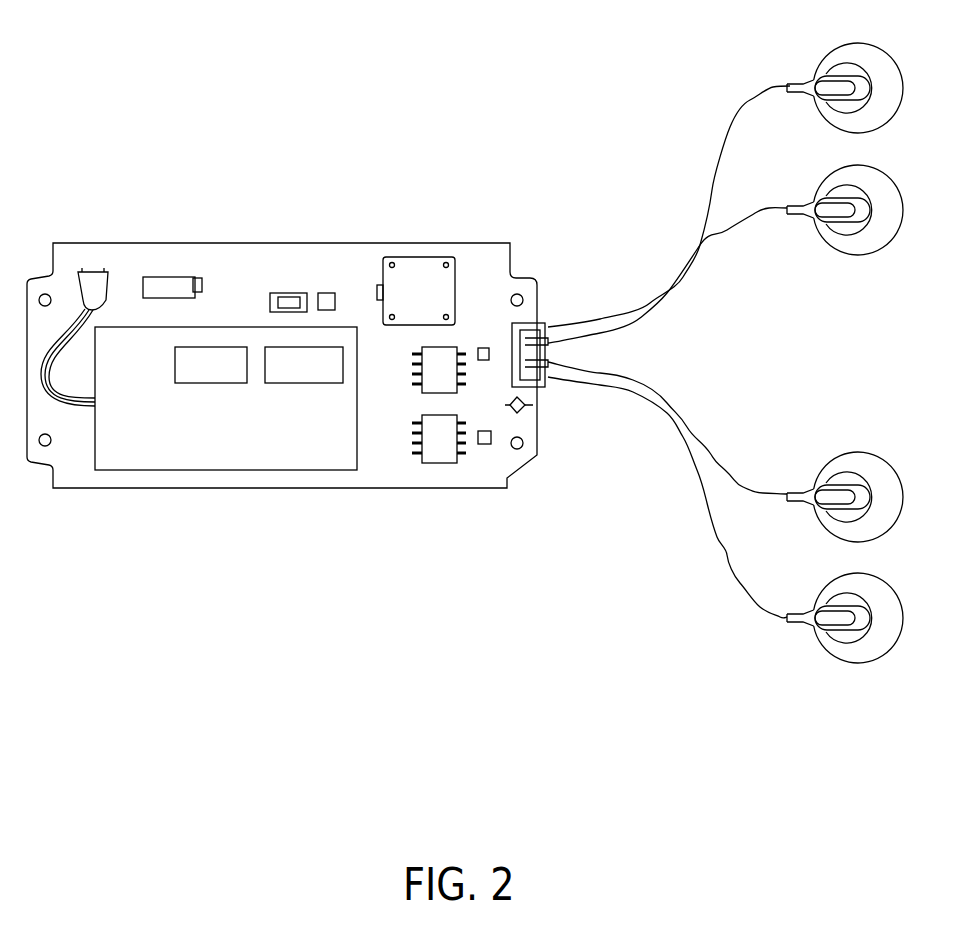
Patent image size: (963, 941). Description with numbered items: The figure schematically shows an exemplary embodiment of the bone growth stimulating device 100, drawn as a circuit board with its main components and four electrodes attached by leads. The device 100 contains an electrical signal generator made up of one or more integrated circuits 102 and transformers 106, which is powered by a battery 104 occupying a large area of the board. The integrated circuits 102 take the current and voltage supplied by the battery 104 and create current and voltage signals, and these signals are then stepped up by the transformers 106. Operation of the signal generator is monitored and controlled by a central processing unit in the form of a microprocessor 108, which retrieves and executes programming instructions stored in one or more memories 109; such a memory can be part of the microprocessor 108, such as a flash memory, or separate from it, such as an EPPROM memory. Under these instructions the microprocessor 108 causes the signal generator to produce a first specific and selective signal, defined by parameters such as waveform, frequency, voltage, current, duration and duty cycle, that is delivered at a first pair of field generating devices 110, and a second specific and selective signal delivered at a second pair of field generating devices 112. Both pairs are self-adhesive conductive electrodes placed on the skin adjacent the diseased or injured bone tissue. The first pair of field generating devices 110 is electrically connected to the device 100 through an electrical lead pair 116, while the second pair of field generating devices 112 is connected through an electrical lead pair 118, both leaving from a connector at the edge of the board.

The bone growth stimulating device 100 is at (190, 103).
The integrated circuits 102 is at (420, 388).
The battery 104 is at (118, 455).
The transformers 106 is at (485, 369).
The microprocessor 108 is at (219, 350).
The memories 109 is at (307, 350).
The first pair of field generating devices 110 is at (860, 42).
The second pair of field generating devices 112 is at (852, 452).
The electrical lead pair 116 is at (708, 200).
The electrical lead pair 118 is at (723, 470).